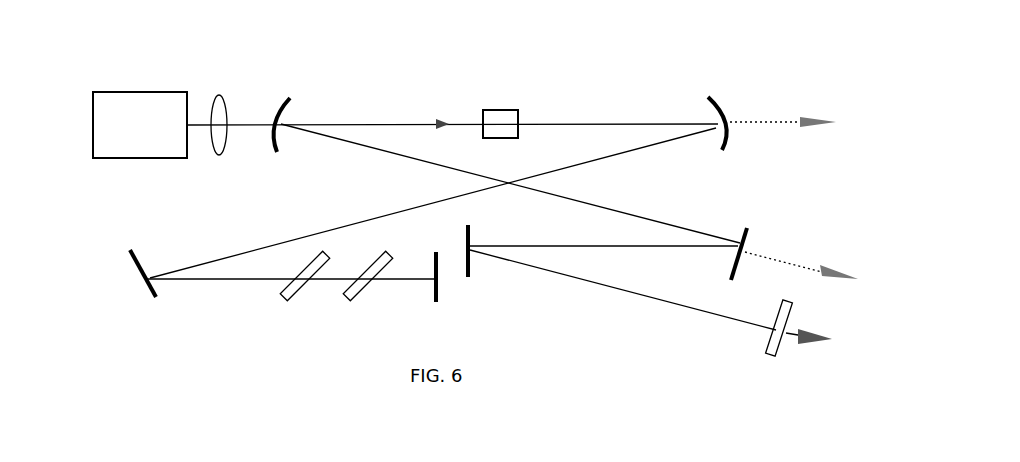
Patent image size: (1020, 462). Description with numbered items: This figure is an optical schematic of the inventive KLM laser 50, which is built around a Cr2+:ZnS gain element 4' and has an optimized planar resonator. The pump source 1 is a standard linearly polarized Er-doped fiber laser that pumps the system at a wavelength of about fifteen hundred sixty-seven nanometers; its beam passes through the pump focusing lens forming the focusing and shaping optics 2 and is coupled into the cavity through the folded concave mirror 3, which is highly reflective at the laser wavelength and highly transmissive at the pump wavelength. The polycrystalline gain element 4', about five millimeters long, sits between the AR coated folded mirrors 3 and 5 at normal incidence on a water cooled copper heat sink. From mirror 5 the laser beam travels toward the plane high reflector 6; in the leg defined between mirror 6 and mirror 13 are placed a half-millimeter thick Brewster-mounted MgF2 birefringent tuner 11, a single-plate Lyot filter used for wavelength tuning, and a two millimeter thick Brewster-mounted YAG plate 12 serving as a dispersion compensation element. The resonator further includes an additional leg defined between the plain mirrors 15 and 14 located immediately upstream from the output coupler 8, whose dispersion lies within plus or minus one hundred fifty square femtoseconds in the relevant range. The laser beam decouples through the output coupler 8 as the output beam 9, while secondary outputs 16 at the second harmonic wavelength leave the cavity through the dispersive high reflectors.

The pump source 1 is at (170, 107).
The pump beam focusing and shaping optics 2 is at (213, 130).
The folded concave dielectric coated mirror 3 is at (281, 135).
The Cr2+:ZnS gain element 4' is at (501, 127).
The folded concave dielectric coated mirror 5 is at (710, 150).
The plane mirror 6 is at (143, 273).
The output coupler 8 is at (778, 345).
The output beam 9 is at (817, 347).
The birefringent tuner 11 is at (298, 288).
The YAG plate 12 is at (358, 290).
The mirror 13 is at (440, 290).
The plain mirror 14 is at (735, 258).
The plain mirror 15 is at (472, 242).
The outputs at SHG 16 is at (782, 124).
The KLM laser 50 is at (513, 339).